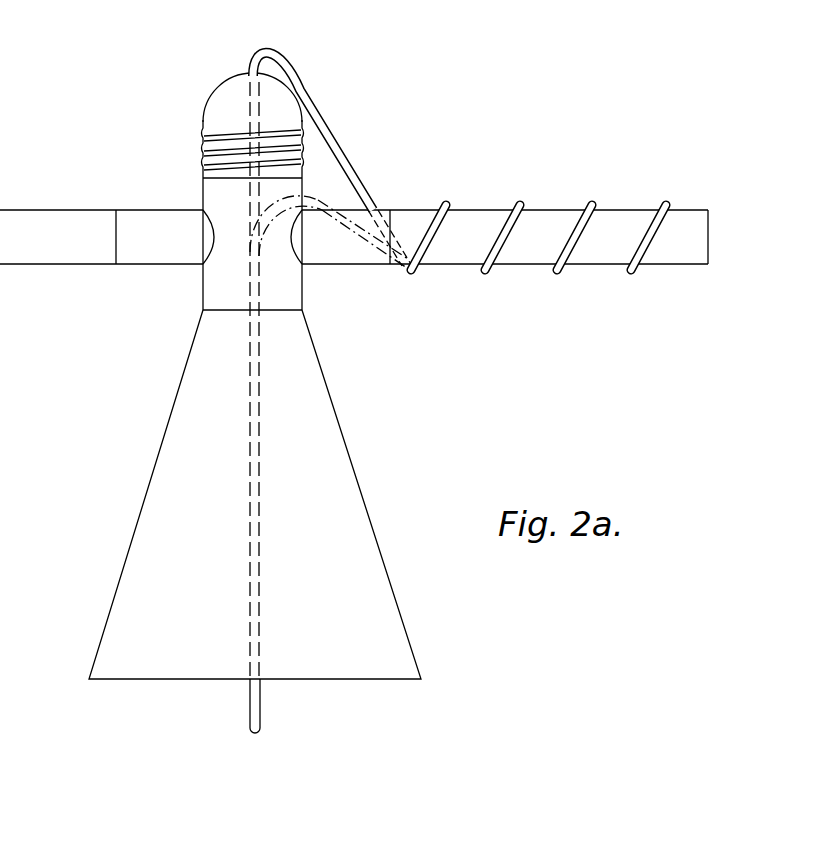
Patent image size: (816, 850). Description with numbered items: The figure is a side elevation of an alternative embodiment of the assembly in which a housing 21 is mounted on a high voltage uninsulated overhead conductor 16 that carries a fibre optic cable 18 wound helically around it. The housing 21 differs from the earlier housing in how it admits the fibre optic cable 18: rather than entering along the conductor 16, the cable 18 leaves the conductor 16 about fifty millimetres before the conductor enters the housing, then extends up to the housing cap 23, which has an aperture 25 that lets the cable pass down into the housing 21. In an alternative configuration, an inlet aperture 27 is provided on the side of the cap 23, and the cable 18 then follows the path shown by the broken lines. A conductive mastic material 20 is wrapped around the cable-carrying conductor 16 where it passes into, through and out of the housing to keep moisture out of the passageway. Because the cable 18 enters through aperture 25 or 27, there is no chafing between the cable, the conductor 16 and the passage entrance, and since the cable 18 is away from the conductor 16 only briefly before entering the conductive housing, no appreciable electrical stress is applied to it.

The high voltage uninsulated overhead conductor 16 is at (48, 227).
The conductive mastic material 20 is at (155, 225).
The housing cap 23 is at (222, 93).
The aperture 25 is at (247, 70).
The inlet aperture 27 is at (305, 187).
The housing 21 is at (371, 502).
The fibre optic cable 18 is at (483, 273).